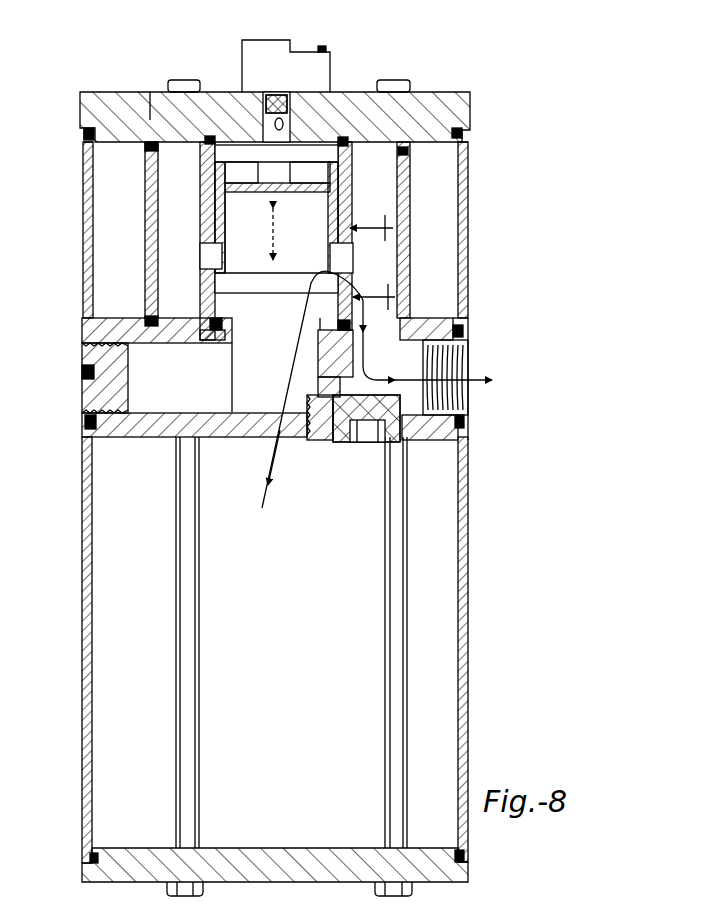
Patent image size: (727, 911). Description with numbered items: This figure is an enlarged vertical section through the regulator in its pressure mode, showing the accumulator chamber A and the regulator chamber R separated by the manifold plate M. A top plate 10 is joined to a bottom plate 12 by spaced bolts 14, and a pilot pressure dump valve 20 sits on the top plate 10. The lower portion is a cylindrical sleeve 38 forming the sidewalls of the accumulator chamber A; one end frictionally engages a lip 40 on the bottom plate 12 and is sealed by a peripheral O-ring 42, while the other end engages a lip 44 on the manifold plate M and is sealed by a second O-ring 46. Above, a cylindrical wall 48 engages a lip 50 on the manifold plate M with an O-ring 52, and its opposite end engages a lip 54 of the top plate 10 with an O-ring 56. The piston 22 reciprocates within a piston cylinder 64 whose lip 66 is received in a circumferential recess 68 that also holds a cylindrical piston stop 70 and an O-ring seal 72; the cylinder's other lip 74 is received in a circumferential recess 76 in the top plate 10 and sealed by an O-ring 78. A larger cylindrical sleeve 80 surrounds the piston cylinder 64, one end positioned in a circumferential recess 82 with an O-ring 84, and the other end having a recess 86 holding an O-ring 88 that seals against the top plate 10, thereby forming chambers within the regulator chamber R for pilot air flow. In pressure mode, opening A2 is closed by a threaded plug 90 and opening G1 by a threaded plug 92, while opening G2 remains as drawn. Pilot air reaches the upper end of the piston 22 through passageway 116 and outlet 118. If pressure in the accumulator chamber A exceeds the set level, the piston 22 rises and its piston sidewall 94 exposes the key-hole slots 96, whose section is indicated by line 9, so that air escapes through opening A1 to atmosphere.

The top plate 10 is at (425, 100).
The bottom plate 12 is at (300, 876).
The bolts 14 is at (185, 90).
The pilot pressure dump valve 20 is at (250, 50).
The piston 22 is at (276, 219).
The cylindrical sleeve 38 is at (84, 620).
The lip 40 is at (465, 858).
The peripheral O-ring 42 is at (468, 868).
The lip 44 is at (86, 432).
The second O-ring 46 is at (86, 422).
The cylindrical wall 48 is at (468, 162).
The lip 50 is at (470, 320).
The O-ring 52 is at (456, 325).
The lip 54 is at (462, 145).
The O-ring 56 is at (457, 128).
The piston cylinder 64 is at (204, 216).
The lip 66 is at (208, 324).
The circumferential recess 68 is at (222, 332).
The cylindrical piston stop 70 is at (287, 312).
The O-ring seal 72 is at (216, 336).
The lip 74 is at (152, 120).
The circumferential recess 76 is at (343, 138).
The O-ring 78 is at (211, 136).
The cylindrical sleeve 80 is at (146, 197).
The circumferential recess 82 is at (150, 320).
The O-ring 84 is at (213, 322).
The recess 86 is at (90, 130).
The O-ring 88 is at (156, 150).
The threaded plug 90 is at (440, 455).
The threaded plug 92 is at (120, 384).
The piston sidewall 94 is at (222, 246).
The key-hole slots 96 is at (204, 258).
The passageway 116 is at (285, 125).
The outlet 118 is at (248, 122).
The section line 9- 9 is at (377, 349).
The regulator chamber R is at (522, 178).
The manifold plate M is at (482, 324).
The accumulator chamber A is at (477, 663).
The opening A1 is at (455, 368).
The opening A2 is at (356, 442).
The opening G1 is at (86, 370).
The opening G2 is at (248, 438).